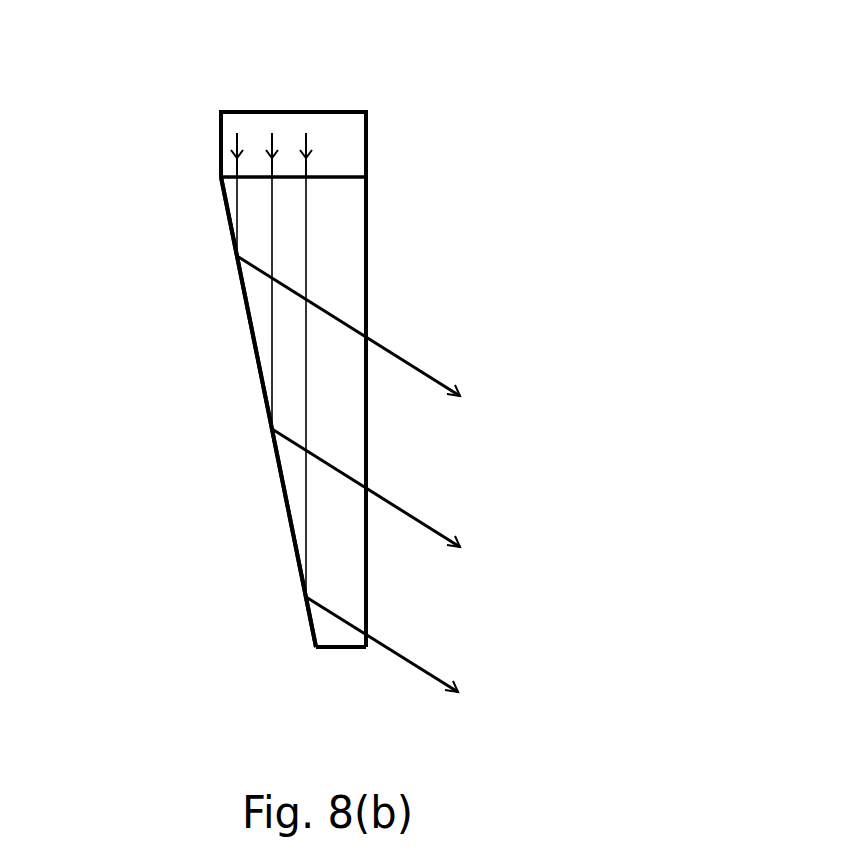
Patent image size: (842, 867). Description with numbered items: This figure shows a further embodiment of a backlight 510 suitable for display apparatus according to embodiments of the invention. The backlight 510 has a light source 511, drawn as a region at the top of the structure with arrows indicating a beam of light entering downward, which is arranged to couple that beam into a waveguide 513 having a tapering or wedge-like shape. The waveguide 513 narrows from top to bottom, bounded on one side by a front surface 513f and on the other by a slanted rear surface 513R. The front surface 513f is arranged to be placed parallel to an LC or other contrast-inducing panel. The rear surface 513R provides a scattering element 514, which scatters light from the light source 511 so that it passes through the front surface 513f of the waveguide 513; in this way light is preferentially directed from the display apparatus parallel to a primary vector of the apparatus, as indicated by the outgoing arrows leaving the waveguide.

The backlight 510 is at (510, 127).
The light source 511 is at (333, 122).
The waveguide 513 is at (345, 438).
The front surface 513f is at (367, 275).
The rear surface 513R is at (240, 292).
The scattering element 514 is at (254, 351).